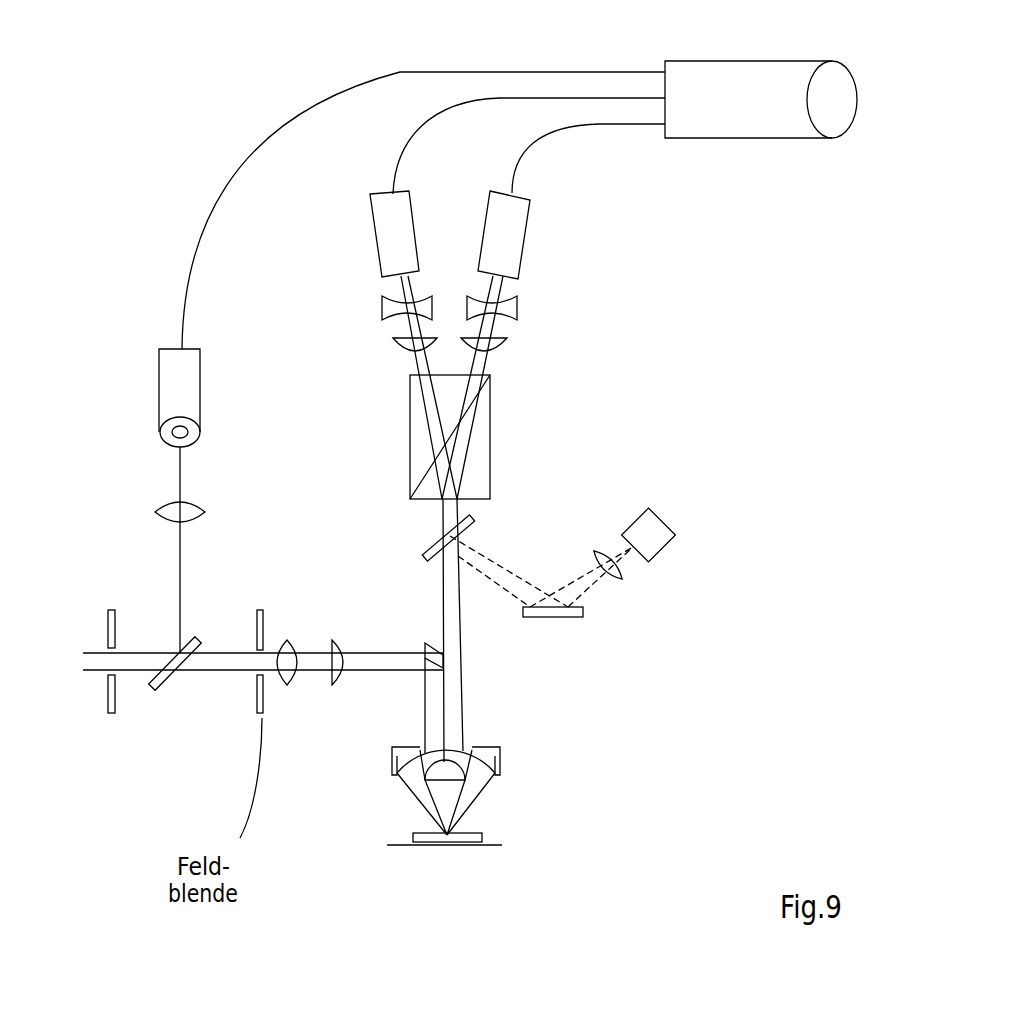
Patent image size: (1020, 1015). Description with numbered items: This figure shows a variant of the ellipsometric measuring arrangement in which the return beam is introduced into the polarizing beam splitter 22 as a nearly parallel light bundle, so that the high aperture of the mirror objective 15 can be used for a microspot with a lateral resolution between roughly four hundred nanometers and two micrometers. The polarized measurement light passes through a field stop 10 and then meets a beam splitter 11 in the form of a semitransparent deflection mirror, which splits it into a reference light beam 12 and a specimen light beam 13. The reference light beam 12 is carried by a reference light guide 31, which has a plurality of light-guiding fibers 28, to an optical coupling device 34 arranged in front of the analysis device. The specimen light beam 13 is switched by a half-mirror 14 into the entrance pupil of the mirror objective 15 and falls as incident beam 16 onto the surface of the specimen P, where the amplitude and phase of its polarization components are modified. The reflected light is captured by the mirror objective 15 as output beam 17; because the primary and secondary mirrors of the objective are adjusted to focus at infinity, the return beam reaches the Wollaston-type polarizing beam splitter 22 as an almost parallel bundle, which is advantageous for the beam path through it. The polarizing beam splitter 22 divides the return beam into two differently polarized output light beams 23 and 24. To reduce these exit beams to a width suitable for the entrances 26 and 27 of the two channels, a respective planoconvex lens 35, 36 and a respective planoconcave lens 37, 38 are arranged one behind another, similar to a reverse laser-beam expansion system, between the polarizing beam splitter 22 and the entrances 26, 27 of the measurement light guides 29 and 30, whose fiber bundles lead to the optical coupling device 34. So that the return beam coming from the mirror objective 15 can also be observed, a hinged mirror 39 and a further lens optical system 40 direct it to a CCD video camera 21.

The field stop 10 is at (108, 627).
The beam splitter 11 is at (157, 690).
The reference light beam 12 is at (168, 510).
The specimen light beam 13 is at (213, 662).
The half-mirror 14 is at (432, 648).
The mirror objective 15 is at (495, 752).
The incident beam 16 is at (417, 787).
The output beam 17 is at (473, 790).
The specimen P is at (482, 838).
The CCD video camera 21 is at (647, 522).
The polarizing beam splitter 22 is at (418, 445).
The output light beam 23 is at (498, 364).
The output light beam 24 is at (417, 363).
The entrance 26 is at (510, 238).
The entrance 27 is at (390, 213).
The light-guiding fibers 28 is at (167, 375).
The measurement light guide 29 is at (640, 127).
The measurement light guide 30 is at (585, 97).
The reference light guide 31 is at (335, 82).
The optical coupling device 34 is at (785, 120).
The planoconvex lens 35 is at (505, 347).
The planoconvex lens 36 is at (392, 343).
The planoconcave lens 37 is at (510, 308).
The planoconcave lens 38 is at (408, 306).
The hinged mirror 39 is at (473, 527).
The lens optical system 40 is at (610, 580).